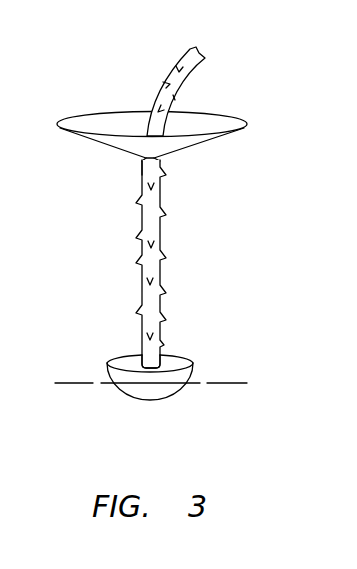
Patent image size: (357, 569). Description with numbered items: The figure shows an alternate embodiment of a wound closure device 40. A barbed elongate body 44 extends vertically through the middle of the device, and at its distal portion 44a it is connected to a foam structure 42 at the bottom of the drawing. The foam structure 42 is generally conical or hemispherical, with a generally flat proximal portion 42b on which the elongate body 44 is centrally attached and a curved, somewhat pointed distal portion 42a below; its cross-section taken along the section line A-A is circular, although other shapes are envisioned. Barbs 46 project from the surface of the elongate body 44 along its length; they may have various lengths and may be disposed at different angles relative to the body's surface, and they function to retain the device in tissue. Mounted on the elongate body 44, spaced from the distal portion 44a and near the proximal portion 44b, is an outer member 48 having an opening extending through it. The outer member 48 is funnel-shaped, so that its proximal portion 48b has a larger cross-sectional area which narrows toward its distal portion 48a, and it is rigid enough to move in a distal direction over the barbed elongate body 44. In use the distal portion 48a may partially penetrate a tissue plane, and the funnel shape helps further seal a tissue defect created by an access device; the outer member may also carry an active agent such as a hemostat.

The wound closure device 40 is at (177, 253).
The foam structure 42 is at (189, 404).
The distal portion of foam structure 42a is at (147, 398).
The proximal portion of foam structure 42b is at (185, 362).
The elongate body 44 is at (146, 264).
The distal portion of elongate body 44a is at (163, 357).
The proximal portion of elongate body 44b is at (140, 168).
The barbs 46 is at (138, 263).
The outer member 48 is at (189, 111).
The distal portion of outer member 48a is at (160, 159).
The proximal portion of outer member 48b is at (225, 118).